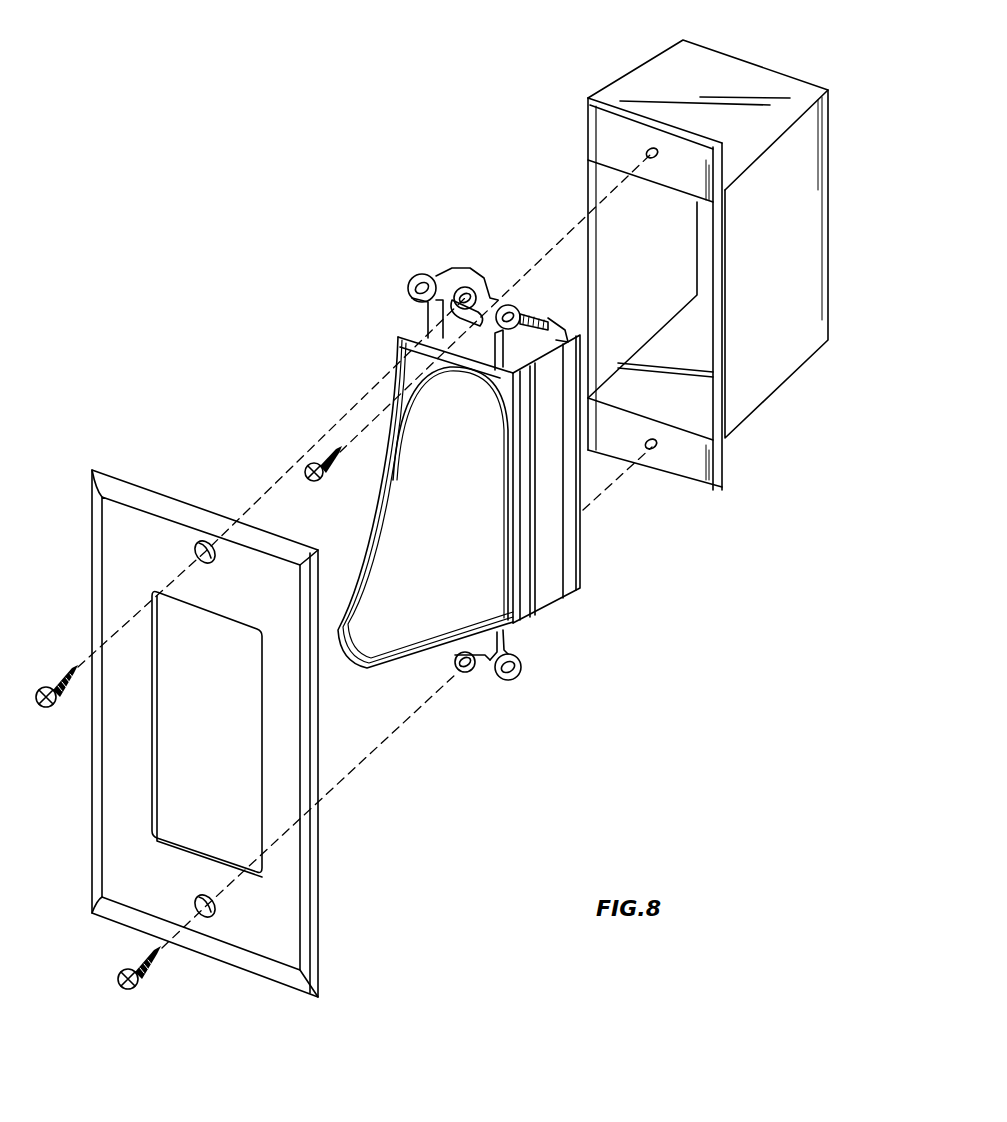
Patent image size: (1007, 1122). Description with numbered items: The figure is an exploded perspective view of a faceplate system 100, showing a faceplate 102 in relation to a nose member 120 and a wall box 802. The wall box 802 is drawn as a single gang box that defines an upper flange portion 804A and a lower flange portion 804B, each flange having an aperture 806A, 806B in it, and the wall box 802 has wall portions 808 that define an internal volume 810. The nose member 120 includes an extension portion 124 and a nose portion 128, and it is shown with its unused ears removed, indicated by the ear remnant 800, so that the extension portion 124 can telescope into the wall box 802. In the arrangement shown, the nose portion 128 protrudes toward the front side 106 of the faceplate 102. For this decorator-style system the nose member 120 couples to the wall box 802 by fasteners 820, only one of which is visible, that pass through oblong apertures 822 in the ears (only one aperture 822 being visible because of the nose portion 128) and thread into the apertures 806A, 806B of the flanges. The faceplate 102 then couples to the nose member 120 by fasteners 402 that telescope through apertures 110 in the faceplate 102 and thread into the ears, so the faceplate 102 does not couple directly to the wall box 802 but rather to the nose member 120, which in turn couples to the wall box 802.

The faceplate system 100 is at (215, 263).
The faceplate 102 is at (211, 707).
The front side 106 is at (158, 569).
The apertures 110 is at (218, 548).
The nose member 120 is at (402, 308).
The extension portion 124 is at (549, 580).
The nose portion 128 is at (448, 586).
The fasteners 402 is at (62, 700).
The ear remnant 800 is at (556, 316).
The wall box 802 is at (667, 280).
The flange portion 804A is at (690, 118).
The flange portion 804B is at (701, 462).
The aperture 806A is at (648, 148).
The aperture 806B is at (656, 450).
The wall portions 808 is at (805, 259).
The internal volume 810 is at (634, 237).
The fasteners 820 is at (330, 468).
The oblong apertures 822 is at (466, 326).